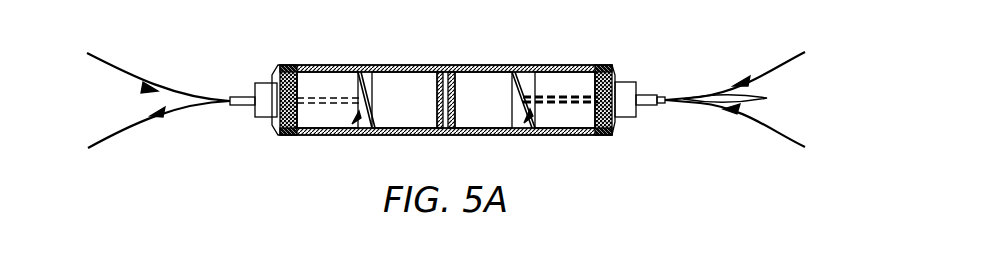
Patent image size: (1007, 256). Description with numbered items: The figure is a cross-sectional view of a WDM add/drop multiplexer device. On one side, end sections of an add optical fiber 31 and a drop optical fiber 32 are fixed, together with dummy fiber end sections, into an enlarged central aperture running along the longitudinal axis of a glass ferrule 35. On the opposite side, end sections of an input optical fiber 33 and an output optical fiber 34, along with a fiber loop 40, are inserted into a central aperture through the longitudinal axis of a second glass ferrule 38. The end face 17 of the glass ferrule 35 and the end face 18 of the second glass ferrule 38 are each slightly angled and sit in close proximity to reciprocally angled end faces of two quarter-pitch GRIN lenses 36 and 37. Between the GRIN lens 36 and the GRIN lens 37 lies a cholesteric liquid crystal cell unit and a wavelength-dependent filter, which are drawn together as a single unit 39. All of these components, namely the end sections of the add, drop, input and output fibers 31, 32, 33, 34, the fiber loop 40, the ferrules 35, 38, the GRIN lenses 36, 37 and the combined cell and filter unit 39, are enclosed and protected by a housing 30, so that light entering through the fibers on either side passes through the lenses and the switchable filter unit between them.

The end face 17 is at (348, 141).
The end face 18 is at (537, 134).
The housing 30 is at (605, 135).
The add optical fiber 31 is at (123, 71).
The drop optical fiber 32 is at (118, 132).
The input optical fiber 33 is at (788, 60).
The output optical fiber 34 is at (777, 125).
The glass ferrule 35 is at (320, 82).
The quarter-pitch GRIN lens 36 is at (395, 83).
The quarter-pitch GRIN lens 37 is at (483, 80).
The second glass ferrule 38 is at (568, 80).
The cholesteric liquid crystal cell unit and wavelength-dependent filter unit 39 is at (445, 67).
The fiber loop 40 is at (767, 98).